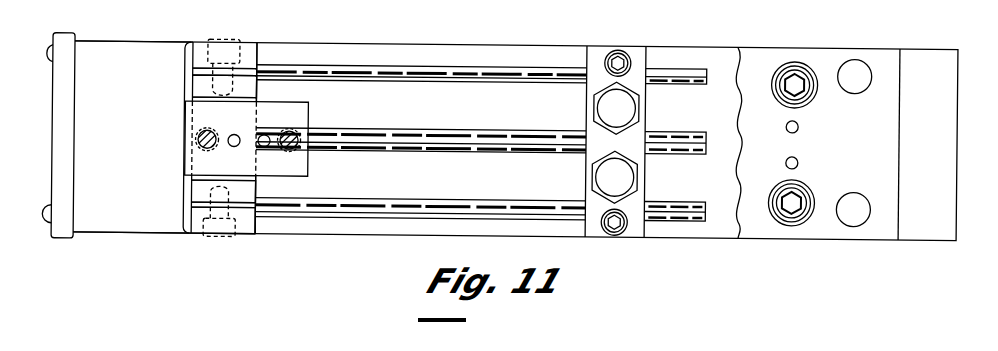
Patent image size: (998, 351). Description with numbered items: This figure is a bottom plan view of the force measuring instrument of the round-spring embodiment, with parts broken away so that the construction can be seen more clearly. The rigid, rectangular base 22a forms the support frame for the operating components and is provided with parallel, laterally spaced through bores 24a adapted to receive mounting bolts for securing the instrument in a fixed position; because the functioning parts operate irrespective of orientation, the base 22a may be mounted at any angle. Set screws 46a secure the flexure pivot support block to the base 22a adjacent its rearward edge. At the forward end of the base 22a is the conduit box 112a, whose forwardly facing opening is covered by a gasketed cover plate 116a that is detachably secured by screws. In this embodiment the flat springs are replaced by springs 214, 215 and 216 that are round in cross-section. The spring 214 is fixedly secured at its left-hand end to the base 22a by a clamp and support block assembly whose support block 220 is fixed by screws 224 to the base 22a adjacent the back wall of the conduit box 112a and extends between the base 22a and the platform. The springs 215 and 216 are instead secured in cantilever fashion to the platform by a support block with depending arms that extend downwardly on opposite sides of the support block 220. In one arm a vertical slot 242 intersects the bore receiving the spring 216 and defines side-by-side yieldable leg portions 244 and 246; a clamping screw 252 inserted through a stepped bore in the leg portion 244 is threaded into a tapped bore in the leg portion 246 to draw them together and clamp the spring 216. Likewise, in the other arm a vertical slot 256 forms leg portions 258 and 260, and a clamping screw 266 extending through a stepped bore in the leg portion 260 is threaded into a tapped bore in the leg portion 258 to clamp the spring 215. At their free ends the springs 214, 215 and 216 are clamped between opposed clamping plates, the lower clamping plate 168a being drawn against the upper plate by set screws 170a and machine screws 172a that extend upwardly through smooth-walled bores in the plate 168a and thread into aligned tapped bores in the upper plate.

The base 22a is at (842, 242).
The through bores 24a is at (848, 66).
The set screws 46a is at (792, 80).
The conduit box 112a is at (131, 42).
The cover plate 116a is at (53, 86).
The clamping plate 168a is at (649, 98).
The set screws 170a is at (618, 52).
The machine screws 172a is at (598, 107).
The spring 214 is at (507, 130).
The spring 215 is at (508, 72).
The spring 216 is at (503, 200).
The support block 220 is at (309, 106).
The screws 224 is at (200, 135).
The vertical slot 242 is at (205, 204).
The leg portion 244 is at (251, 227).
The leg portion 246 is at (251, 190).
The clamping screw 252 is at (228, 38).
The vertical slot 256 is at (200, 63).
The leg portion 258 is at (256, 90).
The leg portion 260 is at (258, 50).
The clamping screw 266 is at (230, 236).